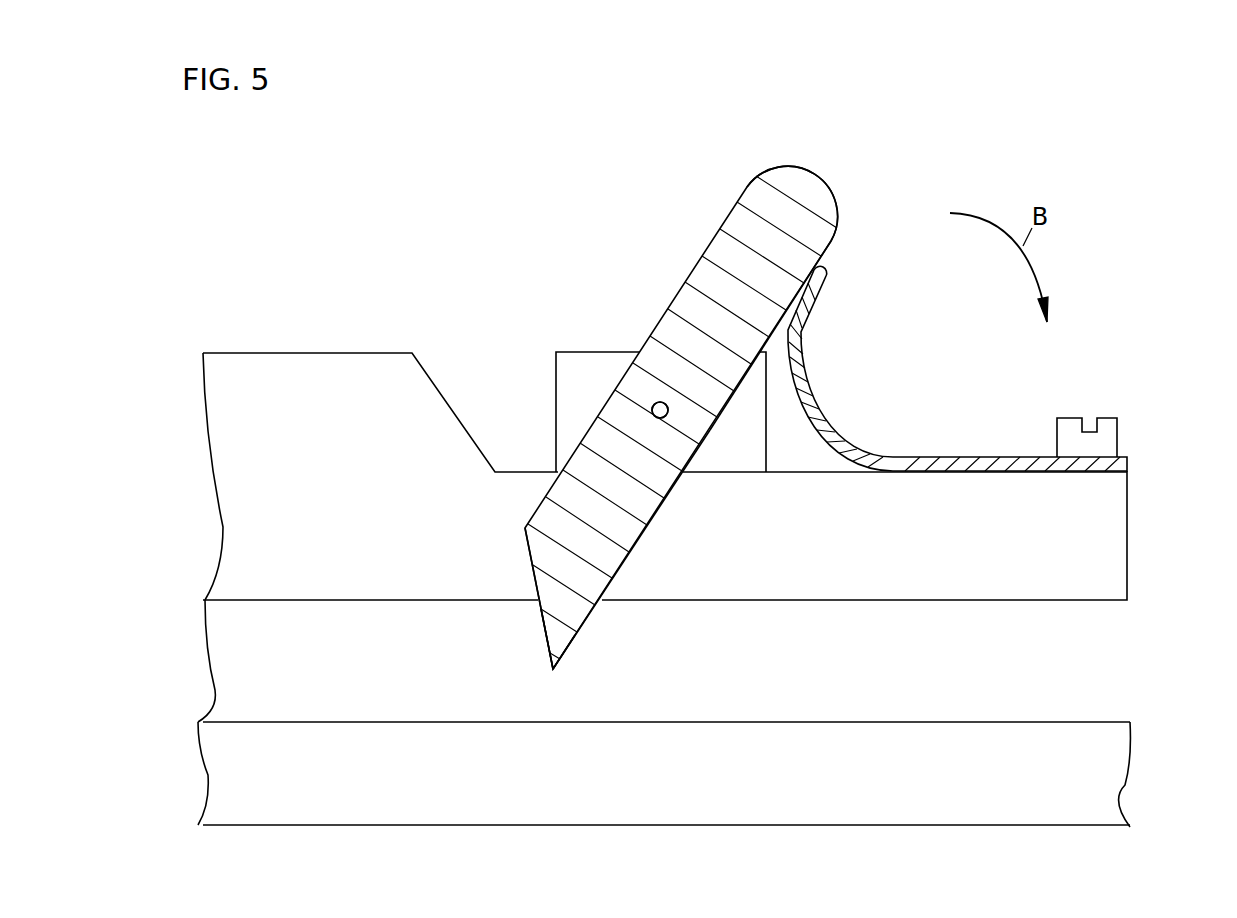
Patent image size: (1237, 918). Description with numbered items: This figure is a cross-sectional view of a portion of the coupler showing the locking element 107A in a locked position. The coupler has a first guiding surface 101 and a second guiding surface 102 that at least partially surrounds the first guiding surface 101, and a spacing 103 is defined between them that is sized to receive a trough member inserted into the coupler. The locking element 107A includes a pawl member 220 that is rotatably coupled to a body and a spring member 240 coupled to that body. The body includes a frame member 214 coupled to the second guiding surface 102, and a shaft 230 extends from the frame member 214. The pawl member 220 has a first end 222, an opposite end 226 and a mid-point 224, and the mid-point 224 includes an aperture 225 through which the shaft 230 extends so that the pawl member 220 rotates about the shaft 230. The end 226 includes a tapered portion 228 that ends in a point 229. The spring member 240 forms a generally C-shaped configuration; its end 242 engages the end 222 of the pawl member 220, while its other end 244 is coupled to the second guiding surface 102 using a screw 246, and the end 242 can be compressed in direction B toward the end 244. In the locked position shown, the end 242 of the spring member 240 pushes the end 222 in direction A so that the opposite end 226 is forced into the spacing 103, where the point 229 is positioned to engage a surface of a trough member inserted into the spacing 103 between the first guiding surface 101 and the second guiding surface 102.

The locking element 107A is at (665, 153).
The pawl member 220 is at (812, 193).
The end of pawl member 222 is at (754, 190).
The mid-point of pawl member 224 is at (710, 430).
The aperture 225 is at (664, 417).
The end of pawl member 226 is at (588, 618).
The tapered portion 228 is at (537, 622).
The point 229 is at (556, 670).
The shaft 230 is at (655, 403).
The frame member 214 is at (575, 370).
The spring member 240 is at (812, 393).
The end of spring member 242 is at (820, 292).
The end of spring member 244 is at (1122, 467).
The screw 246 is at (1107, 427).
The second guiding surface 102 is at (1108, 563).
The spacing 103 is at (848, 657).
The first guiding surface 101 is at (672, 797).